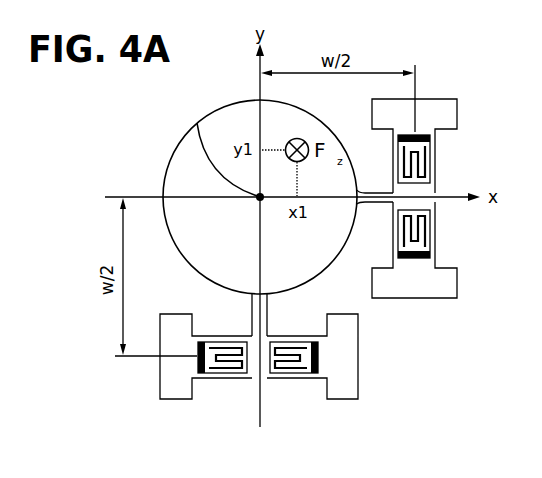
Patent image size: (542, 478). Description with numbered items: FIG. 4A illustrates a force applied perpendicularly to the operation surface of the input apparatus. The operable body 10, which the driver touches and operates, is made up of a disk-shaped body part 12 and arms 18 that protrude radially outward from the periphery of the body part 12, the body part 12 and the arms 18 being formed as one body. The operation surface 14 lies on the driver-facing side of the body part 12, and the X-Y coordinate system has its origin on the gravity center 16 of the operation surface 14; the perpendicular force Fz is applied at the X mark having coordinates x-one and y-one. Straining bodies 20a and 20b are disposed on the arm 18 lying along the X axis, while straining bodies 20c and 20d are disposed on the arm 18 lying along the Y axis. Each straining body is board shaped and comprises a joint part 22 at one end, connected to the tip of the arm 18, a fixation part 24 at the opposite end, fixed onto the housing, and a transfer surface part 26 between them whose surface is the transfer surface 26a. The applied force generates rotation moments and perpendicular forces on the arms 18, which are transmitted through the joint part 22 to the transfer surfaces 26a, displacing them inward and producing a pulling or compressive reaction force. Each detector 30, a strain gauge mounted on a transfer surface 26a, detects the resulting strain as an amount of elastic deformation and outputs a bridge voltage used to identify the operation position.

The operable body 10 is at (219, 80).
The body part 12 is at (175, 152).
The operation surface 14 is at (175, 187).
The gravity center 16 is at (197, 123).
The arm 18 is at (360, 195).
The straining body 20a is at (458, 97).
The straining body 20b is at (437, 298).
The straining body 20c is at (348, 399).
The straining body 20d is at (170, 399).
The joint part 22 is at (247, 375).
The fixation part 24 is at (160, 380).
The transfer surface part 26 is at (200, 378).
The transfer surface 26a is at (227, 378).
The detector 30 is at (431, 166).